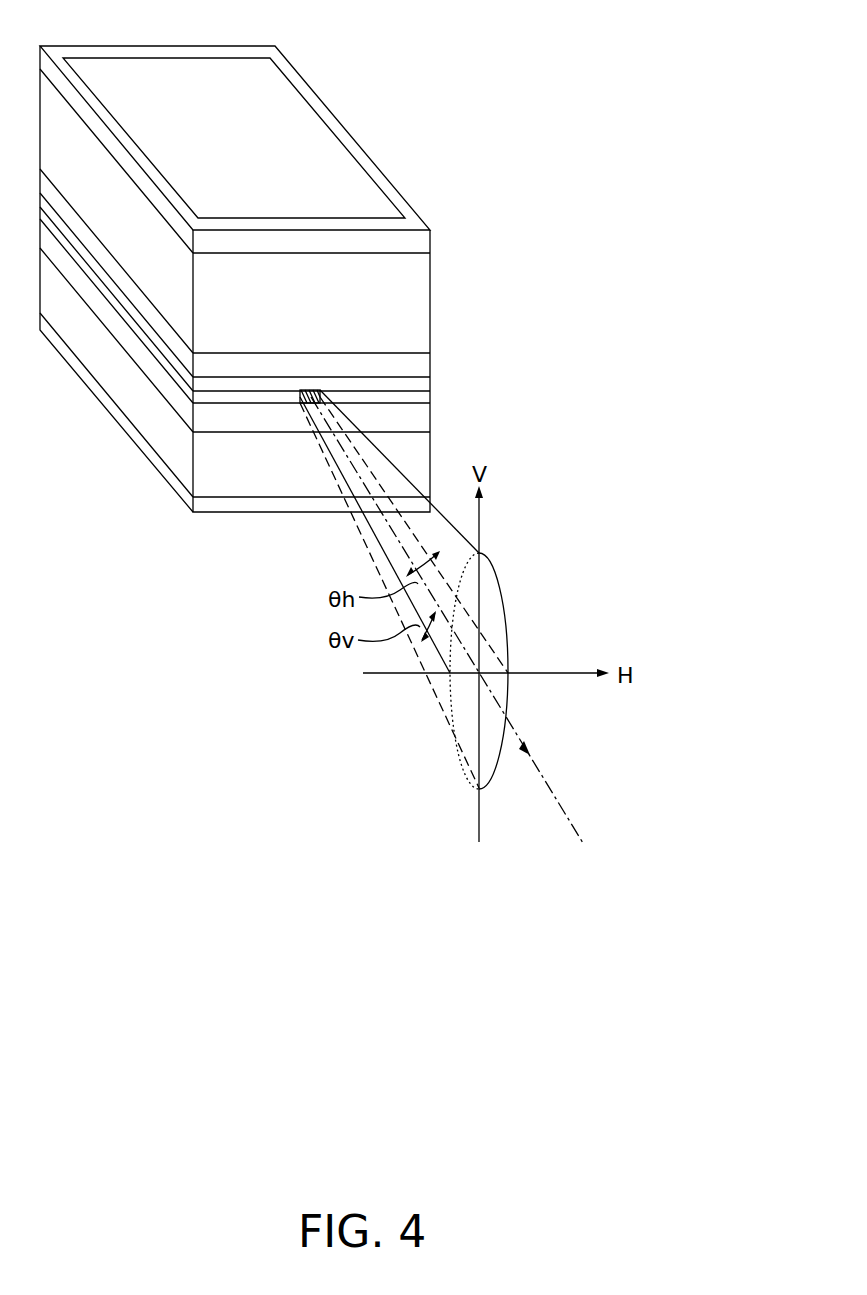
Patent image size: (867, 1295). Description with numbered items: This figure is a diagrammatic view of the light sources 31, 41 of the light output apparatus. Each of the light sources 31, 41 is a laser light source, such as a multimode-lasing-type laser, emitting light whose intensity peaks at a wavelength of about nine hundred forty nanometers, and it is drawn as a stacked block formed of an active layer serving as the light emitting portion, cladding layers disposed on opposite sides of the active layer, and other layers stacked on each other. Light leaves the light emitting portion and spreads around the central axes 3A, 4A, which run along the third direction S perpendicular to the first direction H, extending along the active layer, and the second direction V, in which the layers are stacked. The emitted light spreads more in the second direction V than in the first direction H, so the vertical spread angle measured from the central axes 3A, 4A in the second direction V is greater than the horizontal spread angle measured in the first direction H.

The light source 31 is at (266, 264).
The light source 41 is at (413, 71).
The central axis 3A is at (492, 620).
The central axis 4A is at (567, 811).